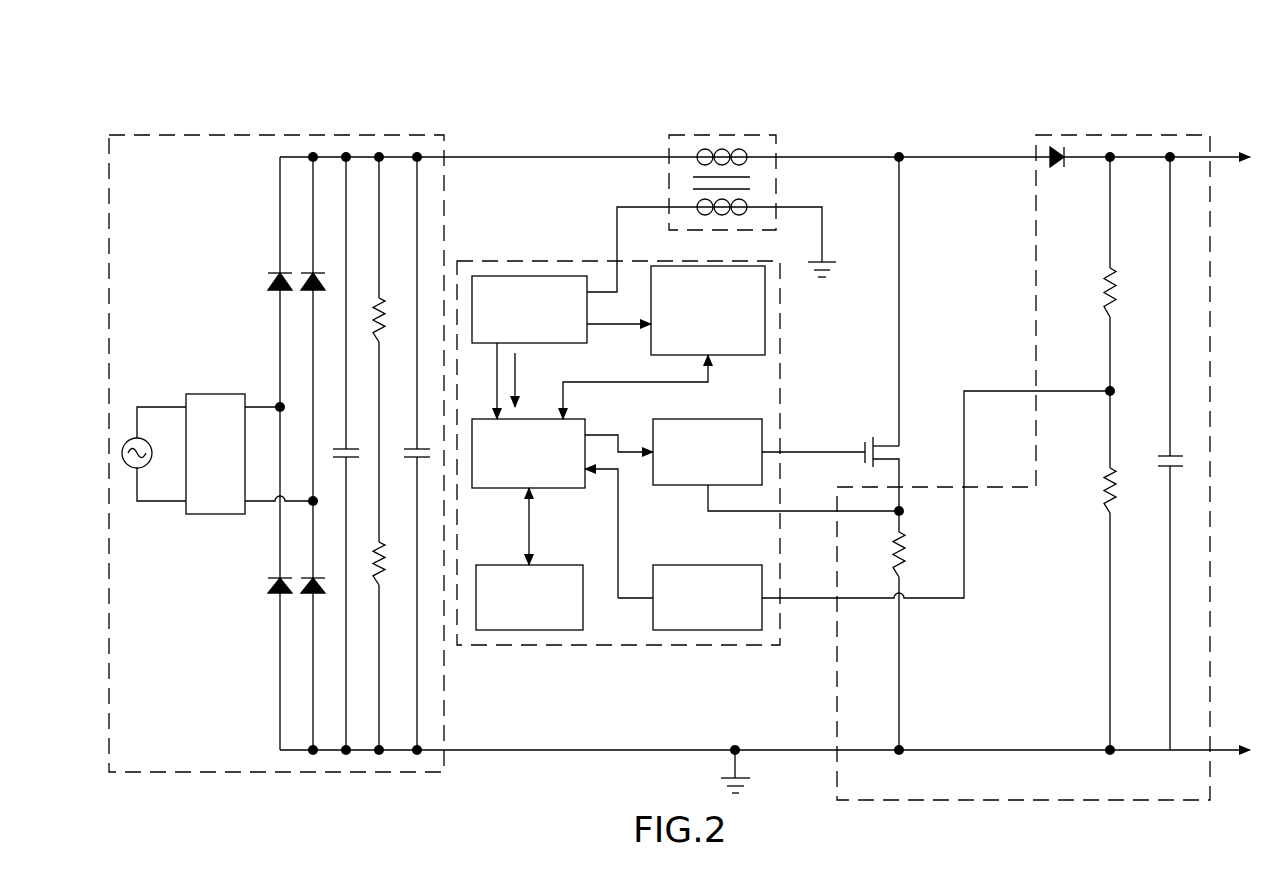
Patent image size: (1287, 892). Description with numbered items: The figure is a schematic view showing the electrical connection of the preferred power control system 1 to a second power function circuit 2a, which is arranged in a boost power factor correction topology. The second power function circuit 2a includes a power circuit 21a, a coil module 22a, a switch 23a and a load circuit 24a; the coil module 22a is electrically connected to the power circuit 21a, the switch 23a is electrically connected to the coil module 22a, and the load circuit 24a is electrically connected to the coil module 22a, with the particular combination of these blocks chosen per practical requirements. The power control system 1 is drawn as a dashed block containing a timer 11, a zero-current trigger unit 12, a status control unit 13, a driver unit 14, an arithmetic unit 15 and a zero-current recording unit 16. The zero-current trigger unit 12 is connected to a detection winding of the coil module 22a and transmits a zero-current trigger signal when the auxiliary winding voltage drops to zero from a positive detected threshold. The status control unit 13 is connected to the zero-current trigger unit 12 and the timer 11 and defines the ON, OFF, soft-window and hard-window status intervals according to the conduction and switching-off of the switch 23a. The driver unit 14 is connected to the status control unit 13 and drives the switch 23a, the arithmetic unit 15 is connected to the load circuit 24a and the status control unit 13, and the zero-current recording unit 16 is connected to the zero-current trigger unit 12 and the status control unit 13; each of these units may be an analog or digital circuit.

The power control system 1 is at (577, 645).
The timer 11 is at (492, 630).
The zero-current trigger unit 12 is at (574, 276).
The status control unit 13 is at (492, 488).
The driver unit 14 is at (670, 485).
The arithmetic unit 15 is at (672, 630).
The zero-current recording unit 16 is at (752, 355).
The second power function circuit 2a is at (1100, 62).
The power circuit 21a is at (424, 135).
The coil module 22a is at (765, 135).
The switch 23a is at (863, 447).
The load circuit 24a is at (1098, 134).